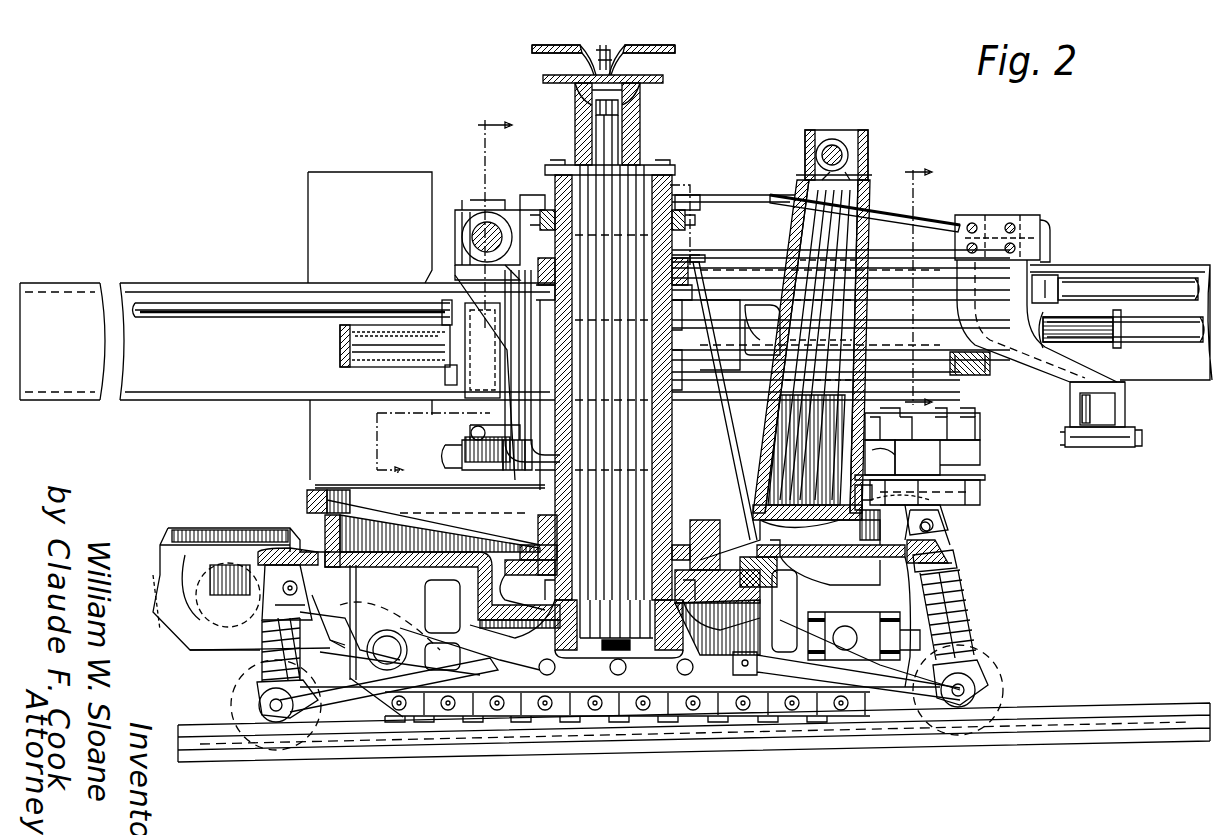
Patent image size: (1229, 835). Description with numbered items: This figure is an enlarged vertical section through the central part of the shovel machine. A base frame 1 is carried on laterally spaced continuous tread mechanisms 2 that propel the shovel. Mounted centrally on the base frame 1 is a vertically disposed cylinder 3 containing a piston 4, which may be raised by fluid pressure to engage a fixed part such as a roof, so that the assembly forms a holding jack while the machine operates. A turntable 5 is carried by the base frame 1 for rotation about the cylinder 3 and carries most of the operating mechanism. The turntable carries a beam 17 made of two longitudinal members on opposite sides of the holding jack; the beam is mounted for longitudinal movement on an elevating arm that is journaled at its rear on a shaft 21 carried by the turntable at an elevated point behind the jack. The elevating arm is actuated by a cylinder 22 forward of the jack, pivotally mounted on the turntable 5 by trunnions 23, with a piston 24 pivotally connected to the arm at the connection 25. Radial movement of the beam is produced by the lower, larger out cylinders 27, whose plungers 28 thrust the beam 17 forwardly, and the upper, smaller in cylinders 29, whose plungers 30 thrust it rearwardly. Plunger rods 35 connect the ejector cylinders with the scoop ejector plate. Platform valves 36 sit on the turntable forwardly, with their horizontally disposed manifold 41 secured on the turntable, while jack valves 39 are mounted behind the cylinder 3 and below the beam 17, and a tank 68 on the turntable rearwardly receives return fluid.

The base frame 1 is at (878, 572).
The continuous tread mechanisms 2 is at (616, 721).
The cylinder 3 is at (682, 188).
The piston 4 is at (642, 128).
The turntable 5 is at (982, 493).
The beam 17 is at (290, 370).
The shaft 21 is at (470, 215).
The cylinder 22 is at (915, 476).
The trunnions 23 is at (935, 518).
The piston 24 is at (872, 190).
The pivotal connection 25 is at (870, 153).
The out cylinders 27 is at (992, 395).
The plungers 28 is at (1170, 342).
The in cylinders 29 is at (720, 290).
The plungers 30 is at (218, 320).
The plunger rods 35 is at (970, 378).
The platform valves 36 is at (965, 432).
The jack valves 39 is at (460, 436).
The manifold 41 is at (960, 455).
The tank 68 is at (370, 326).